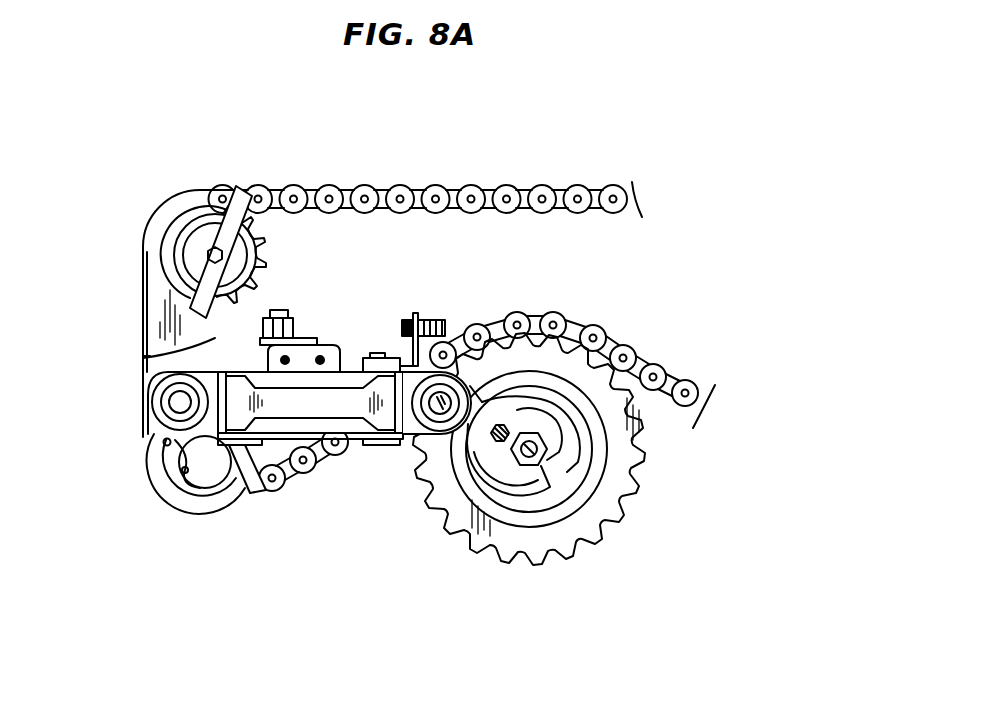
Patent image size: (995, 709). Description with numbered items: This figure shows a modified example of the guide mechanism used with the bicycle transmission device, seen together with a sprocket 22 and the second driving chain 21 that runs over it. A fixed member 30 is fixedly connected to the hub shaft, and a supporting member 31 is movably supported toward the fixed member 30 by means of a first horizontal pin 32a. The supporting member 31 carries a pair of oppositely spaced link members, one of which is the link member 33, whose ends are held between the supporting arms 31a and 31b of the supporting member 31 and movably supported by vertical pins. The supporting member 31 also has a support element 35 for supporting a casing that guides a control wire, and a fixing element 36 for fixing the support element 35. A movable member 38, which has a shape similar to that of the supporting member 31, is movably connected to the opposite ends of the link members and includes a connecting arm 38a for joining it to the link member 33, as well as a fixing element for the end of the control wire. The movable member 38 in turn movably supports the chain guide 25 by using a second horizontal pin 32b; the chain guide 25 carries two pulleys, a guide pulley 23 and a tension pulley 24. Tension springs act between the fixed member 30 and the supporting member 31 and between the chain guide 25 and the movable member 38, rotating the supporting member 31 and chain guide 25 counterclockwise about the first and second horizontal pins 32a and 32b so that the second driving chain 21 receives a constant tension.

The second driving chain 21 is at (520, 192).
The sprocket 22 is at (628, 462).
The guide pulley 23 is at (257, 227).
The tension pulley 24 is at (200, 497).
The chain guide 25 is at (157, 253).
The fixed member 30 is at (522, 480).
The supporting member 31 is at (410, 438).
The supporting arm 31a is at (368, 440).
The supporting arm 31b is at (353, 358).
The first horizontal pin 32a is at (180, 402).
The second horizontal pin 32b is at (540, 458).
The link member 33 is at (318, 425).
The support element 35 is at (438, 320).
The fixing element 36 is at (290, 322).
The movable member 38 is at (150, 444).
The connecting arm 38a is at (143, 356).